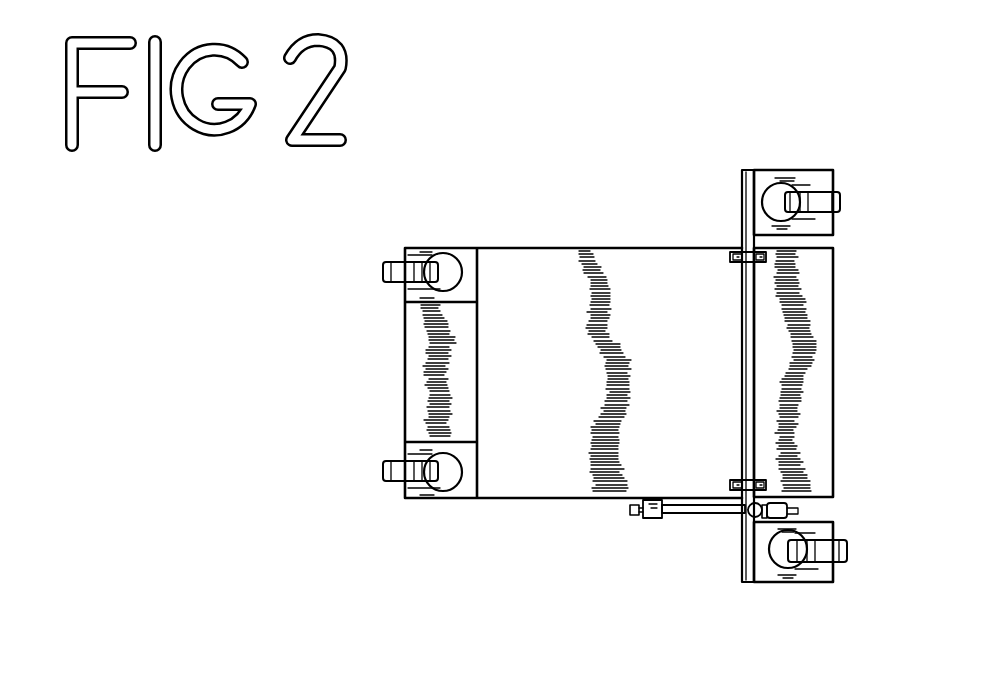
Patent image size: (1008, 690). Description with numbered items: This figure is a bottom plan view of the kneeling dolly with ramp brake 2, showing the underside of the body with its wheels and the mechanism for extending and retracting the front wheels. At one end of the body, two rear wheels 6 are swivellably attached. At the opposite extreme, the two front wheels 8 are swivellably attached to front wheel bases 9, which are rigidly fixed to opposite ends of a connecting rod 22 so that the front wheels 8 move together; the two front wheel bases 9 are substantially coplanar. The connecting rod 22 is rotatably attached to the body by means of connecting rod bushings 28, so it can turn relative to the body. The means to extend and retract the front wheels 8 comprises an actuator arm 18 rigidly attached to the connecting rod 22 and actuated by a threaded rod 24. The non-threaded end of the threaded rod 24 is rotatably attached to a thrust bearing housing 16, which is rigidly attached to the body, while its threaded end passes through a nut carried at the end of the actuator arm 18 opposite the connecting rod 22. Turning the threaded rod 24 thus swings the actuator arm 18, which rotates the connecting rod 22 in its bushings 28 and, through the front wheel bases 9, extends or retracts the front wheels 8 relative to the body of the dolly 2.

The kneeling dolly with ramp brake 2 is at (760, 74).
The rear wheels 6 is at (383, 271).
The front wheels 8 is at (840, 205).
The front wheel base 9 is at (798, 170).
The thrust bearing housing 16 is at (656, 519).
The actuator arm 18 is at (760, 520).
The connecting rod 22 is at (757, 368).
The threaded rod 24 is at (687, 514).
The connecting rod bushings 28 is at (738, 257).